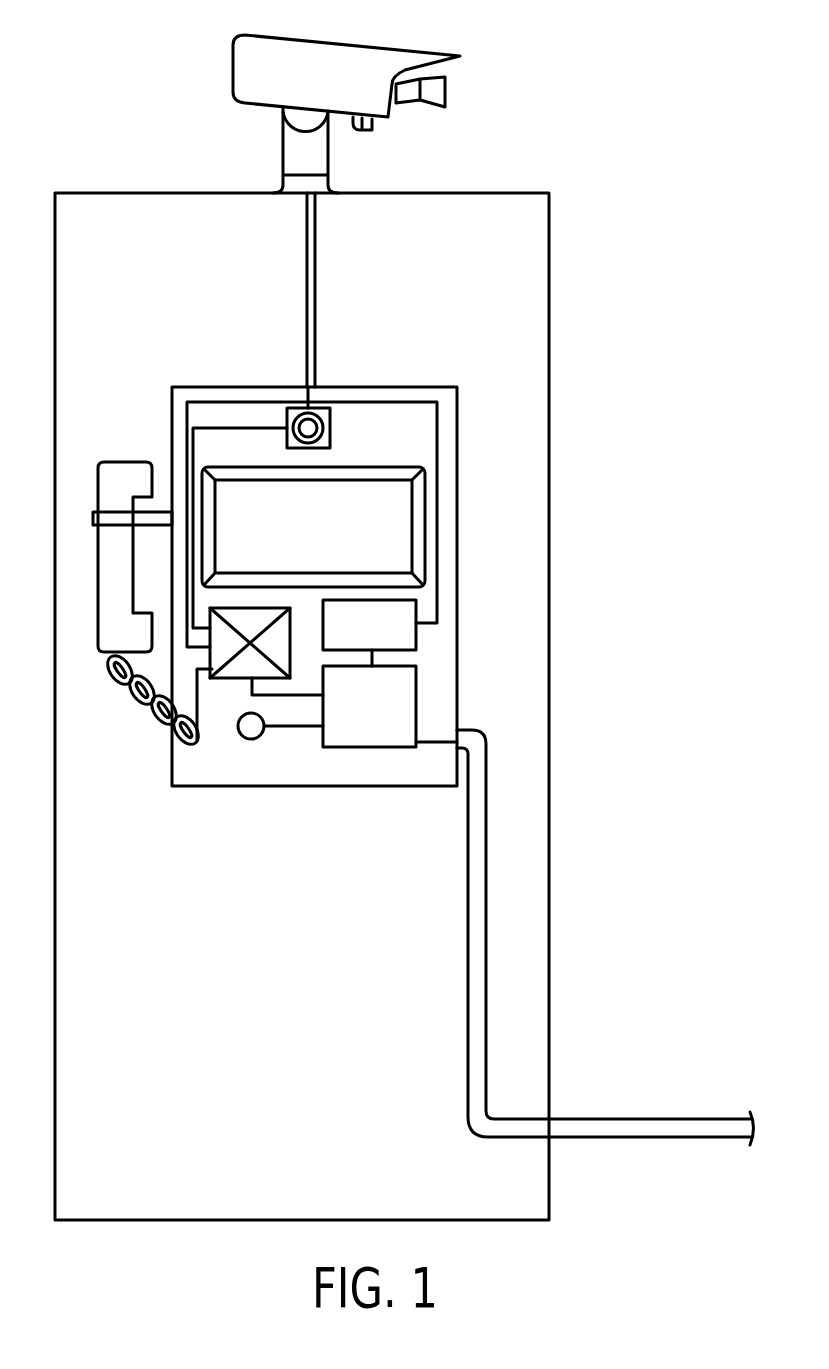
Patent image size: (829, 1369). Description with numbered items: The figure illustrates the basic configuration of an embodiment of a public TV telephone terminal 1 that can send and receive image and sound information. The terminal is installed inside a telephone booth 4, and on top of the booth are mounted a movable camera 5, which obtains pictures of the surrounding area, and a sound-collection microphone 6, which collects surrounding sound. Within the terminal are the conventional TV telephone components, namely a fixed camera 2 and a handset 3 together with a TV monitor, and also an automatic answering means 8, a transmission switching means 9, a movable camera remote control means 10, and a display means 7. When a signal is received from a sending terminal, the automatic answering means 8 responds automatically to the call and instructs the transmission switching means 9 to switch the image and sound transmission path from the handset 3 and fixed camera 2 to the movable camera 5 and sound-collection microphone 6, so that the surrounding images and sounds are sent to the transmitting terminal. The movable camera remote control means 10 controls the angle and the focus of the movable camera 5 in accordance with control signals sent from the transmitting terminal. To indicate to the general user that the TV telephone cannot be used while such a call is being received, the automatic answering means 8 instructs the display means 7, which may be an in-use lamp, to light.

The TV telephone terminal 1 is at (388, 387).
The fixed camera 2 is at (332, 423).
The handset 3 is at (117, 462).
The telephone booth 4 is at (552, 197).
The movable camera 5 is at (407, 47).
The sound-collection microphone 6 is at (375, 124).
The display means 7 is at (252, 740).
The automatic answering means 8 is at (408, 748).
The transmission switching means 9 is at (240, 678).
The movable camera remote control means 10 is at (416, 630).